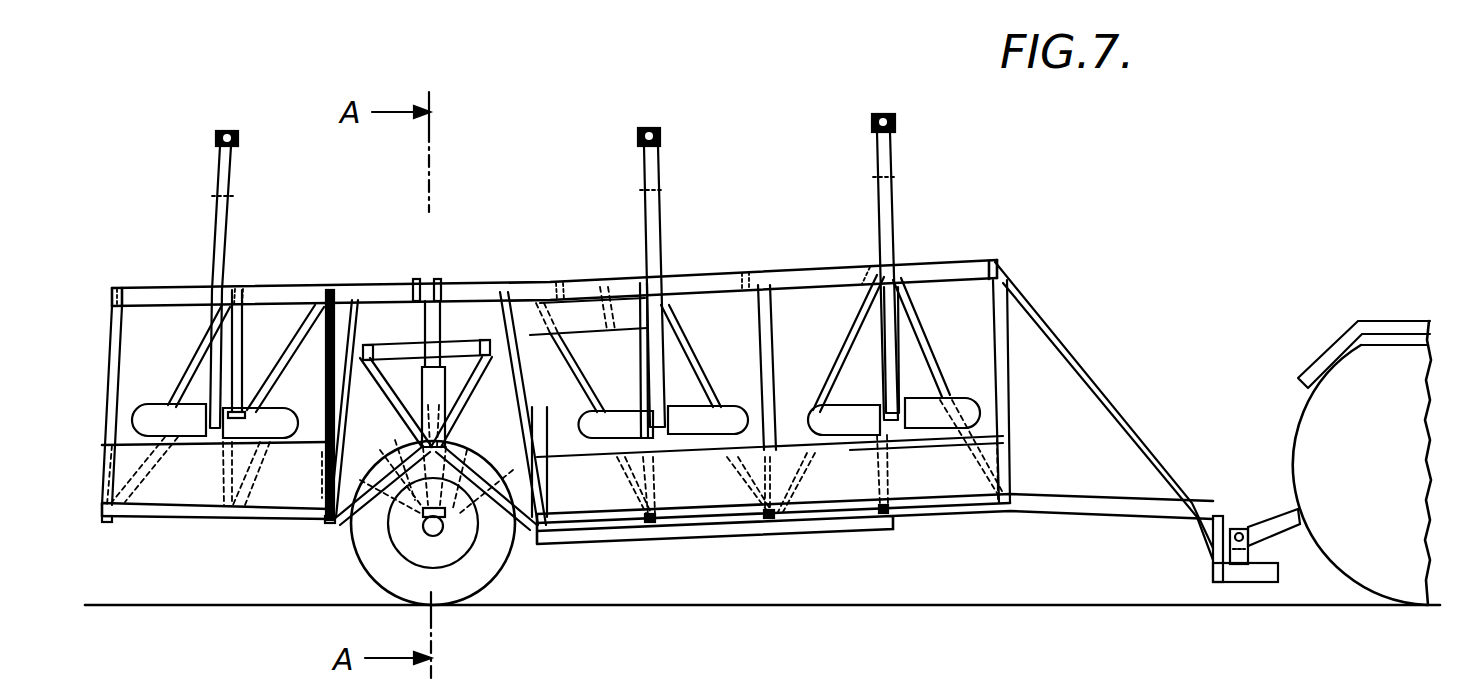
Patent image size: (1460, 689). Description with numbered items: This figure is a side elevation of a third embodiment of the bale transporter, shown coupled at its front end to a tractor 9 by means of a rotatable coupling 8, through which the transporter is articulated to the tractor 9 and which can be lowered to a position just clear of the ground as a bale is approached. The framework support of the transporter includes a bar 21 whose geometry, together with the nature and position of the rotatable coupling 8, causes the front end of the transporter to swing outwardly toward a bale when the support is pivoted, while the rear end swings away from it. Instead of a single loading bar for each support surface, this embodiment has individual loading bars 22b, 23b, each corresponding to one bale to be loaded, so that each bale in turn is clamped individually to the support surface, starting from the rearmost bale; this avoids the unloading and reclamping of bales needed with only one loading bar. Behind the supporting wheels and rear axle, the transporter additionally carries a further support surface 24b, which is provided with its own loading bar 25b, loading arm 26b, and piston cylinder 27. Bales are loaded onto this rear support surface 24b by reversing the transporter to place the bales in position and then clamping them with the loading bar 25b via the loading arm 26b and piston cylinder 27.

The piston cylinder 27 is at (230, 131).
The loading arm 26b is at (216, 230).
The loading bar 25b is at (248, 410).
The further support surface 24b is at (210, 512).
The individual loading bar 23b is at (622, 418).
The individual loading bar 22b is at (850, 418).
The bar 21 is at (1073, 358).
The rotatable coupling 8 is at (1270, 525).
The tractor 9 is at (1367, 430).